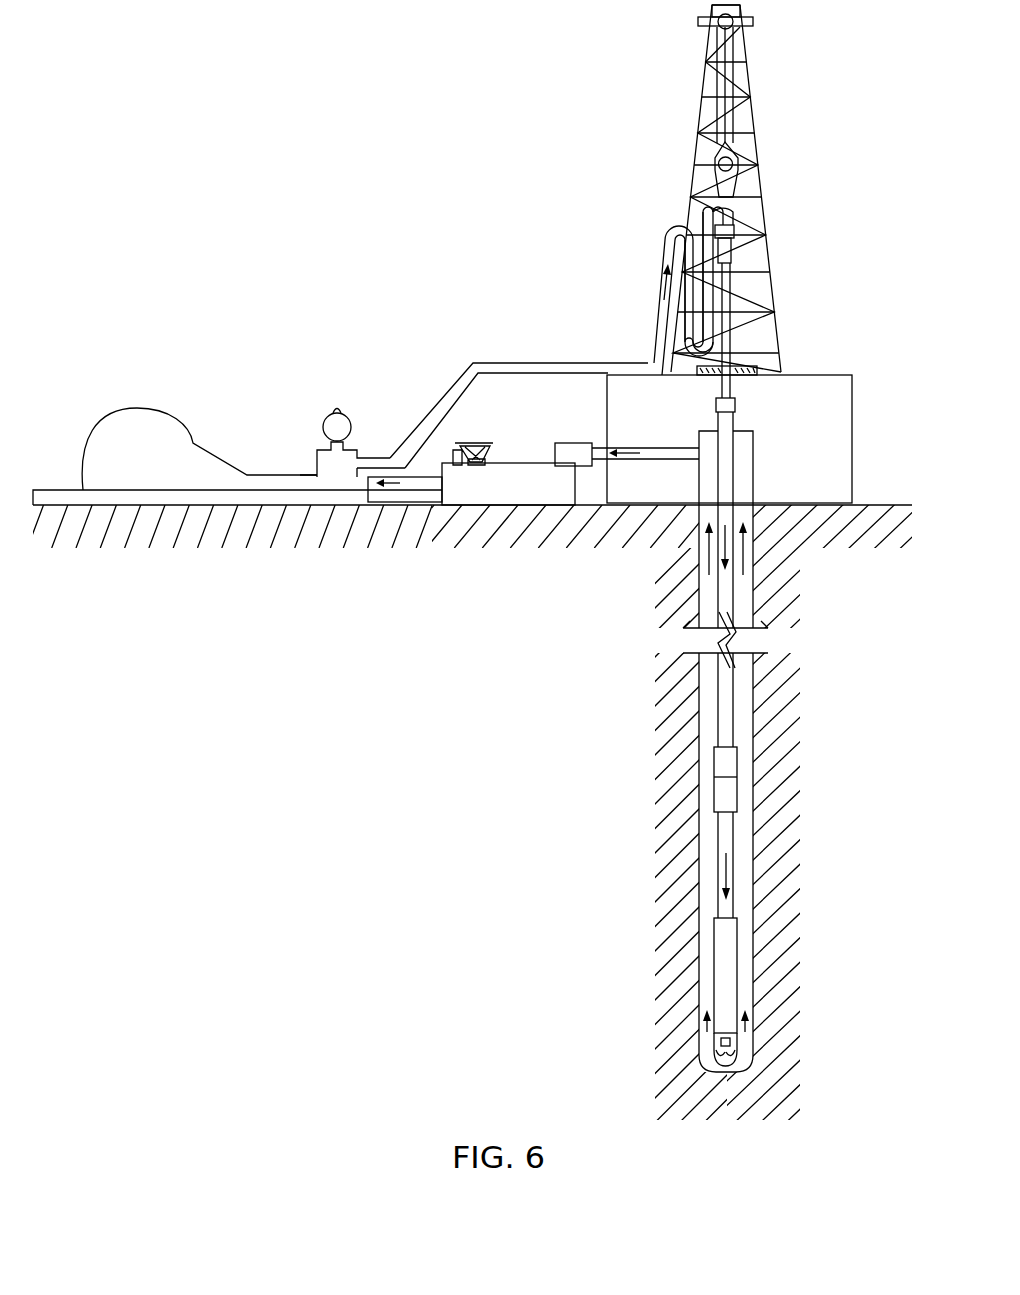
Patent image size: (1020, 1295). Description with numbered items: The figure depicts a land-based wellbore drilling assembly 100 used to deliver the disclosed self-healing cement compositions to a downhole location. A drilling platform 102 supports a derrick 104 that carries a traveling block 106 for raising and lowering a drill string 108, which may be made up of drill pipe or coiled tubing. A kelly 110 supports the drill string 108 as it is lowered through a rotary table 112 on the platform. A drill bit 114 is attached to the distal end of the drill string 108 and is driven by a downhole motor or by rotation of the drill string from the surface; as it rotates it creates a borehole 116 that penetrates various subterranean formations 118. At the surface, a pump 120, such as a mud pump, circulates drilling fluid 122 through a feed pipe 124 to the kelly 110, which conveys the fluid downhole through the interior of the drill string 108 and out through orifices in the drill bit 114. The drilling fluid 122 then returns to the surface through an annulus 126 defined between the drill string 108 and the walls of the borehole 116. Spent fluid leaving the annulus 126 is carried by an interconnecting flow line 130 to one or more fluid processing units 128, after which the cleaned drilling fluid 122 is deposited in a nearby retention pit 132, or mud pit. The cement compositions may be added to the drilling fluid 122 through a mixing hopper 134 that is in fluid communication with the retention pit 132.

The wellbore drilling assembly 100 is at (440, 92).
The drilling platform 102 is at (853, 383).
The derrick 104 is at (757, 108).
The traveling block 106 is at (742, 152).
The drill string 108 is at (750, 615).
The kelly 110 is at (752, 287).
The rotary table 112 is at (762, 373).
The drill bit 114 is at (757, 1045).
The borehole 116 is at (753, 706).
The subterranean formations 118 is at (588, 740).
The pump 120 is at (153, 469).
The drilling fluid 122 is at (389, 462).
The feed pipe 124 is at (493, 363).
The annulus 126 is at (745, 868).
The fluid processing unit 128 is at (573, 443).
The interconnecting flow line 130 is at (683, 460).
The retention pit 132 is at (551, 492).
The mixing hopper 134 is at (458, 468).